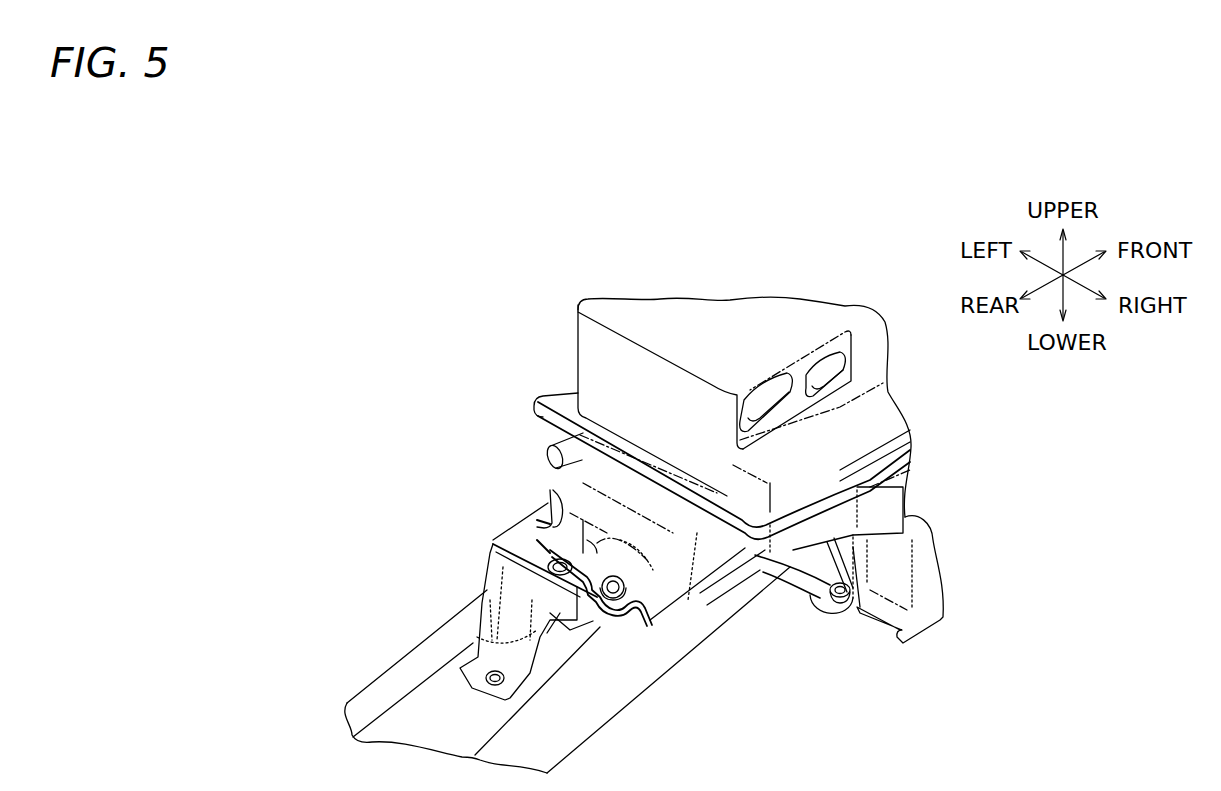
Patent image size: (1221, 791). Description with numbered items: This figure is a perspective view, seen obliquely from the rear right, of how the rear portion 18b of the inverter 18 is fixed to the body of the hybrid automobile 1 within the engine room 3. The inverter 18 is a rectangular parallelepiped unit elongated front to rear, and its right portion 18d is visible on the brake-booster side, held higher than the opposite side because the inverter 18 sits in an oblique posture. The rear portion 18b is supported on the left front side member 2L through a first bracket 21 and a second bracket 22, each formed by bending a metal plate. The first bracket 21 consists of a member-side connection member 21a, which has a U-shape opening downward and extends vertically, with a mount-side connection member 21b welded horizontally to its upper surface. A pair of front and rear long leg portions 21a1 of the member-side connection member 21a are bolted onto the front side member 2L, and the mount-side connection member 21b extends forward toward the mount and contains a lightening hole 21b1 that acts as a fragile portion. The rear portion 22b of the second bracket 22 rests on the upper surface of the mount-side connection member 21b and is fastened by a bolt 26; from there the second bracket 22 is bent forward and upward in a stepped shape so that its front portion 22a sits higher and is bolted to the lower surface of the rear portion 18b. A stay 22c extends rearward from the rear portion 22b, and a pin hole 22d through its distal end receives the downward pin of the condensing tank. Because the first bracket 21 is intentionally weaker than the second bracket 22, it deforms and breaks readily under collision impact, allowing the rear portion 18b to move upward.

The hybrid automobile 1 is at (658, 190).
The inverter 18 is at (714, 300).
The rear portion of the inverter 18b is at (605, 350).
The right portion of the inverter 18d is at (877, 419).
The first bracket 21 is at (391, 468).
The member-side connection member 21a is at (490, 567).
The mount-side connection member 21b is at (512, 522).
The leg portions 21a1 is at (530, 641).
The lightening hole 21b1 is at (547, 497).
The second bracket 22 is at (687, 603).
The front portion of the second bracket 22a is at (777, 558).
The rear portion of the second bracket 22b is at (660, 603).
The stay 22c is at (627, 560).
The pin hole 22d is at (572, 560).
The bolt 26 is at (615, 614).
The left front side member 2L is at (597, 700).
The engine room 3 is at (1000, 620).